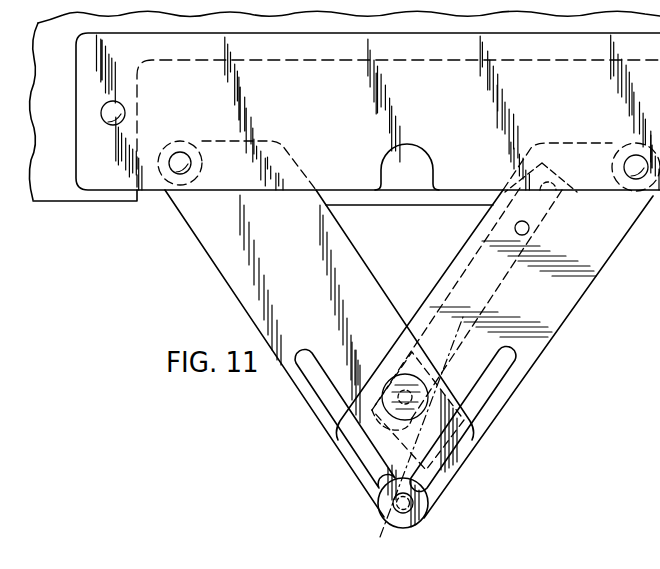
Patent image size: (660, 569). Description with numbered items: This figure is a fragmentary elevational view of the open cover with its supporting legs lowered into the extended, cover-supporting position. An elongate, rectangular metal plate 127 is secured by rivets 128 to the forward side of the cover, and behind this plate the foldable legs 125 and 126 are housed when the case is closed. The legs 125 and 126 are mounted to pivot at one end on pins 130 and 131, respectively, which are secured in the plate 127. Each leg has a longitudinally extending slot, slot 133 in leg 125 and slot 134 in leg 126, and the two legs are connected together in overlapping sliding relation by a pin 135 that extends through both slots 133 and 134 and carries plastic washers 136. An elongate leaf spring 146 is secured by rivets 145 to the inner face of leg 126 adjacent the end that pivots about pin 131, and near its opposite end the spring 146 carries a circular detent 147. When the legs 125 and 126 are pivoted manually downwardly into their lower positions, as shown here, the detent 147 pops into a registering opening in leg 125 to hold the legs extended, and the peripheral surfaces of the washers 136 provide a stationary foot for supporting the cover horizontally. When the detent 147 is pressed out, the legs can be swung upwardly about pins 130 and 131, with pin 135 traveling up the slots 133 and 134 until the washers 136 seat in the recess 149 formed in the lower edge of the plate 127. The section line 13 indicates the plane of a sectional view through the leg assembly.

The section line 13- 13 is at (463, 316).
The foldable leg 125 is at (353, 259).
The foldable leg 126 is at (570, 316).
The rectangular metal plate 127 is at (108, 186).
The rivets 128 is at (112, 124).
The pin 130 is at (181, 152).
The pin 131 is at (629, 158).
The slot 133 is at (313, 384).
The slot 134 is at (486, 398).
The pin 135 is at (393, 506).
The plastic washers 136 is at (428, 511).
The rivets 145 is at (548, 190).
The leaf spring 146 is at (453, 273).
The circular detent 147 is at (388, 381).
The recess 149 is at (435, 186).